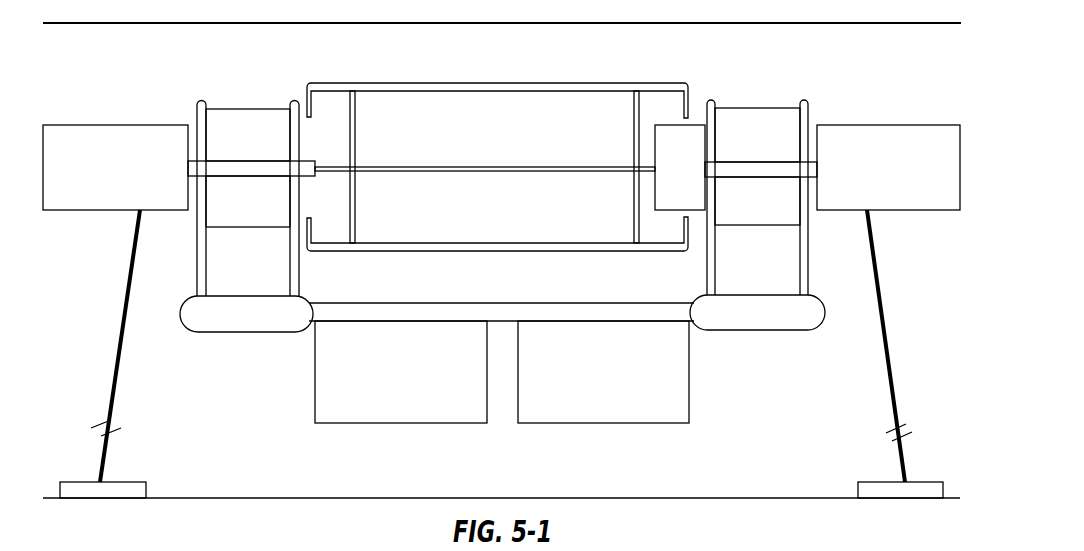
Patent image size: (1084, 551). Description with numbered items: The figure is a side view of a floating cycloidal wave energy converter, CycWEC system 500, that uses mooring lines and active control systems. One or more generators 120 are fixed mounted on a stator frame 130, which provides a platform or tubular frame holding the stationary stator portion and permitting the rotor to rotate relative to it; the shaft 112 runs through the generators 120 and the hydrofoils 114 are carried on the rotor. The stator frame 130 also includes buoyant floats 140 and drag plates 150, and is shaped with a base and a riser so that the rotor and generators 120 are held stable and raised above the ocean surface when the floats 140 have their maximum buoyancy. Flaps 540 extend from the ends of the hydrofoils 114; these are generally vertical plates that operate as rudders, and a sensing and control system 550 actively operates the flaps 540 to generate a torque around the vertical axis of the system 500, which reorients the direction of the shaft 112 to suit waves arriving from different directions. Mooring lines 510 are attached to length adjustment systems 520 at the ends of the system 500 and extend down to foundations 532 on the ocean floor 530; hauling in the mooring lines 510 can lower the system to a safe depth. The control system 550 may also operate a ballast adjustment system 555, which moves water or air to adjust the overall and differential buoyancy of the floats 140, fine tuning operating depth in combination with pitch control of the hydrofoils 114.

The CycWEC system 500 is at (270, 68).
The shaft 112 is at (463, 167).
The hydrofoils 114 is at (502, 83).
The generator 120 is at (665, 178).
The stator frame 130 is at (520, 303).
The floats 140 is at (230, 323).
The drag plates 150 is at (230, 144).
The mooring lines 510 is at (112, 362).
The length adjustment systems 520 is at (99, 206).
The ocean floor 530 is at (346, 498).
The foundations 532 is at (129, 481).
The flaps 540 is at (312, 111).
The sensing and control system 550 is at (385, 409).
The ballast adjustment system 555 is at (624, 409).